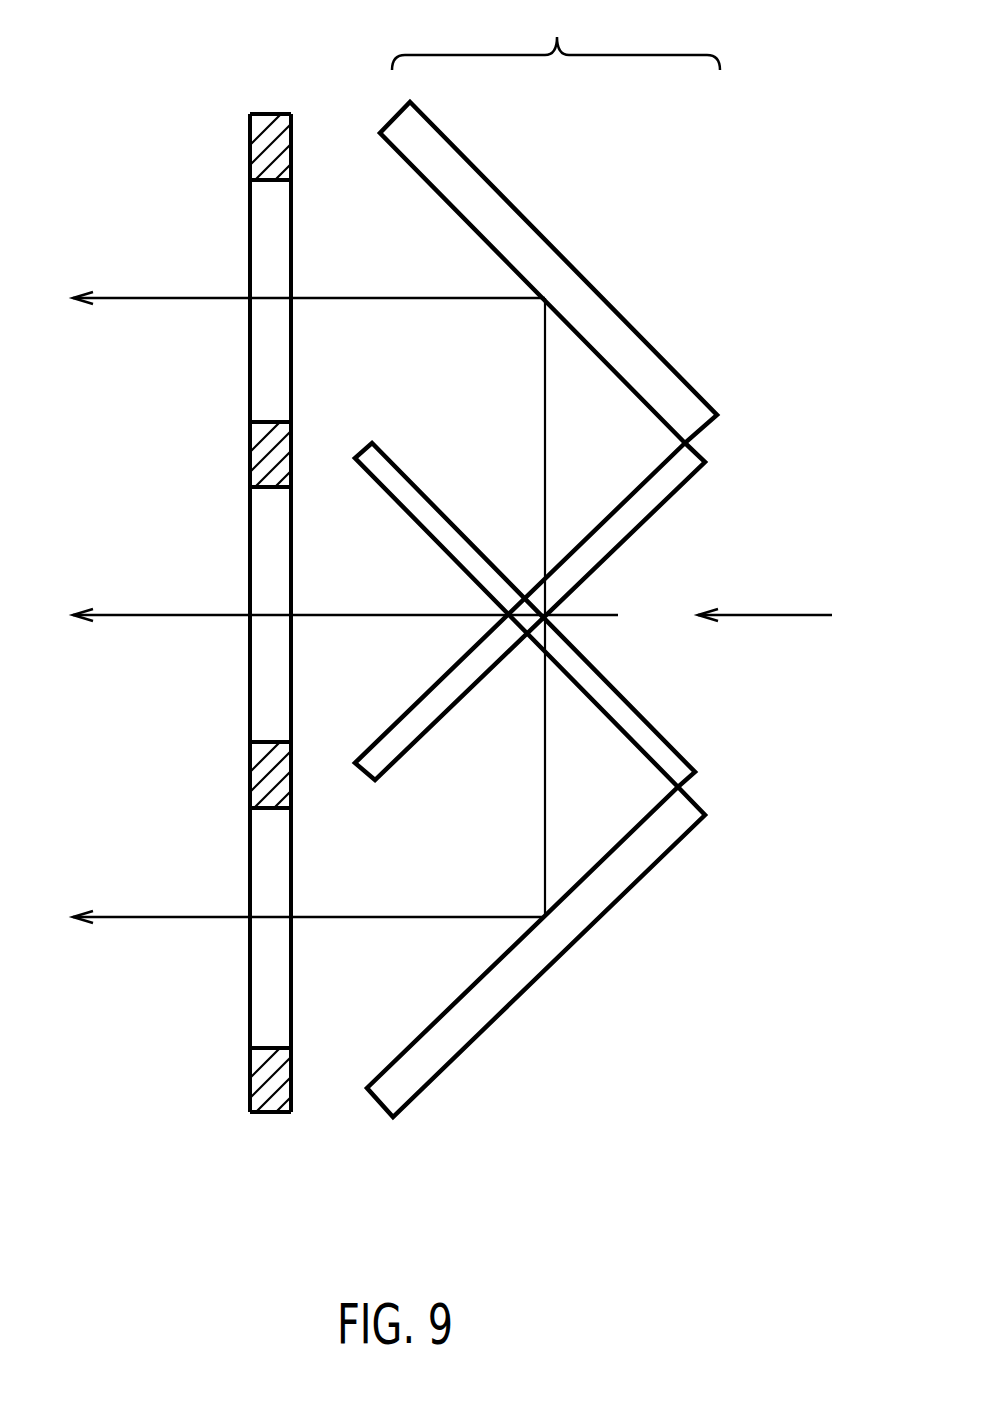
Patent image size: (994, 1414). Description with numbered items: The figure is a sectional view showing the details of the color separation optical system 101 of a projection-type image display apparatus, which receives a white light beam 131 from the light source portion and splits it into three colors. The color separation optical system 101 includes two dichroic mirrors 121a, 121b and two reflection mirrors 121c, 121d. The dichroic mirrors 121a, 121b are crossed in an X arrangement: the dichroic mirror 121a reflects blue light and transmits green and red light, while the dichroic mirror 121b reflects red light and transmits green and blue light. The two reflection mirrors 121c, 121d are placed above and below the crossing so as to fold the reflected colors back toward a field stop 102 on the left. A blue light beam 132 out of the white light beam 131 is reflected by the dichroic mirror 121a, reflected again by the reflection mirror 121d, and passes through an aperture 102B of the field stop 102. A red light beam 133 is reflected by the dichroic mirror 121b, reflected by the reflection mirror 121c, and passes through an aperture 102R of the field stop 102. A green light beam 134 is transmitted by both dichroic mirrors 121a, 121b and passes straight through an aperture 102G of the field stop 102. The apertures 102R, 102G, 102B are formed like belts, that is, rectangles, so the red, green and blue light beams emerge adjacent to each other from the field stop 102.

The color separation optical system 101 is at (586, 558).
The field stop 102 is at (248, 140).
The aperture 102R is at (282, 258).
The aperture 102G is at (281, 596).
The aperture 102B is at (281, 1032).
The dichroic mirror 121a is at (686, 488).
The dichroic mirror 121b is at (653, 720).
The reflection mirror 121c is at (643, 338).
The reflection mirror 121d is at (673, 847).
The white light beam 131 is at (807, 615).
The blue light beam 132 is at (167, 919).
The red light beam 133 is at (167, 300).
The green light beam 134 is at (167, 617).